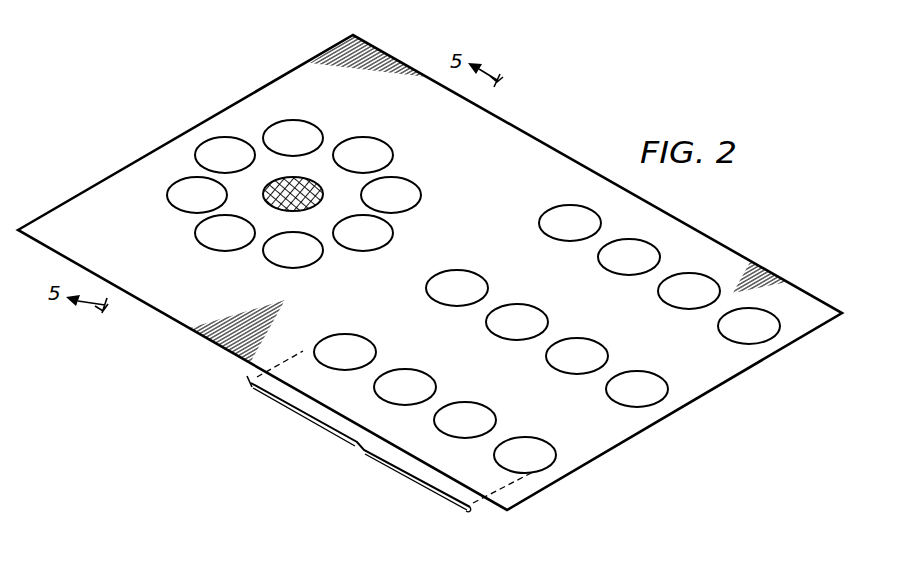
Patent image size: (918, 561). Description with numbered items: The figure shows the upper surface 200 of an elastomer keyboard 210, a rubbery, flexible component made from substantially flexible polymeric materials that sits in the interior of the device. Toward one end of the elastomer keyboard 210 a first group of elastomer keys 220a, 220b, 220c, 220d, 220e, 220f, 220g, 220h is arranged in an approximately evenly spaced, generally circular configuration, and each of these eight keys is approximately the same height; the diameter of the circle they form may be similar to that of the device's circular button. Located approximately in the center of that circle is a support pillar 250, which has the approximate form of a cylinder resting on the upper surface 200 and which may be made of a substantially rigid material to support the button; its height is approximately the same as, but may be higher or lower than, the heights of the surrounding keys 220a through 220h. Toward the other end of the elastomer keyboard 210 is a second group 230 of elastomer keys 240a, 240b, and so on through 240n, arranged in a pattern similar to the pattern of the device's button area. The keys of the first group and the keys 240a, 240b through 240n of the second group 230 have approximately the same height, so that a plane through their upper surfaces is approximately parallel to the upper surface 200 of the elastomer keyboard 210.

The upper surface 200 is at (552, 158).
The elastomer keyboard 210 is at (718, 242).
The elastomer key 220a is at (212, 148).
The elastomer key 220b is at (296, 124).
The elastomer key 220c is at (383, 152).
The elastomer key 220d is at (410, 190).
The elastomer key 220e is at (383, 232).
The elastomer key 220f is at (287, 264).
The elastomer key 220g is at (206, 238).
The elastomer key 220h is at (181, 200).
The support pillar 250 is at (301, 186).
The second group of elastomer keys 230 is at (366, 450).
The elastomer key 240a is at (348, 345).
The elastomer key 240b is at (405, 379).
The elastomer key 240n is at (740, 338).